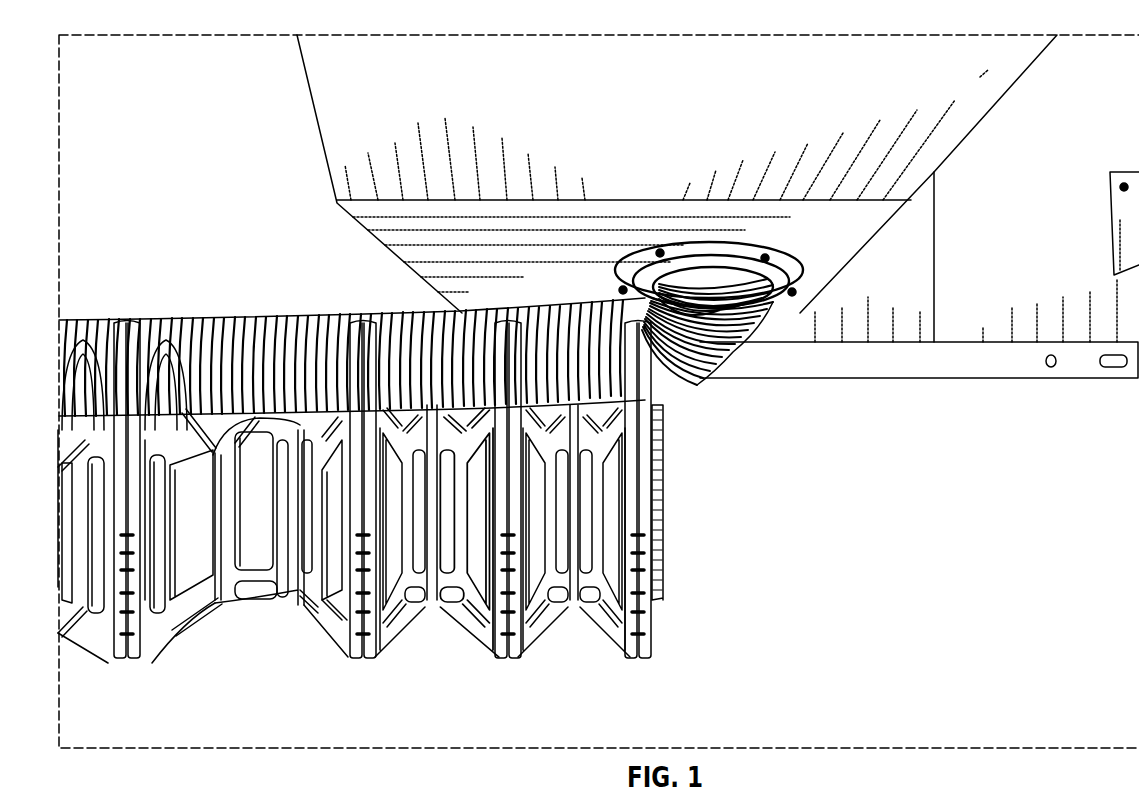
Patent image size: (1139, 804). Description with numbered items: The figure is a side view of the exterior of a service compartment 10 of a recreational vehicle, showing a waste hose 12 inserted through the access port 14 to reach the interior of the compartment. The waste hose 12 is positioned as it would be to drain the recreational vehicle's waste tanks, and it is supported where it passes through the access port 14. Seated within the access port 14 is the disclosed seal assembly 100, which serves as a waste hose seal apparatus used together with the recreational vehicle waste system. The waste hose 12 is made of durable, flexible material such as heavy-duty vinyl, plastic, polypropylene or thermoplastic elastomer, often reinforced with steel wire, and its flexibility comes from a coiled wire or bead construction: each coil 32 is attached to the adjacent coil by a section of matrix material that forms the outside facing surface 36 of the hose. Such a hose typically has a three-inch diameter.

The service compartment 10 is at (633, 101).
The waste hose 12 is at (693, 392).
The access port 14 is at (797, 310).
The coil 32 is at (713, 346).
The outside facing surface 36 is at (720, 358).
The seal assembly 100 is at (773, 303).